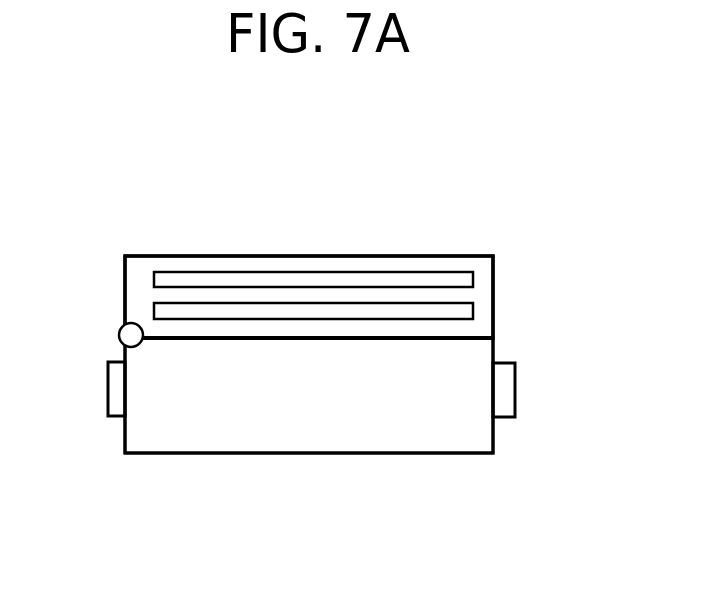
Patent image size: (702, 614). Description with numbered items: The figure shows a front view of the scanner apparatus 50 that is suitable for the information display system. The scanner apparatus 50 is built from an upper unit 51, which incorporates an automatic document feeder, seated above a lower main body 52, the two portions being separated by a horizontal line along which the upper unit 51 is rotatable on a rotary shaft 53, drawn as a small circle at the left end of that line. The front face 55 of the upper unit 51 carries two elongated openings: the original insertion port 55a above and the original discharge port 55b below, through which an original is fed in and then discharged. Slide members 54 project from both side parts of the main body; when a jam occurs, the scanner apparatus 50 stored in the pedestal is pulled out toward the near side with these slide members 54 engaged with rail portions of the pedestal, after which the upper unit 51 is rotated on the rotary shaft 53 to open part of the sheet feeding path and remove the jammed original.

The scanner apparatus 50 is at (500, 200).
The upper unit 51 is at (317, 252).
The lower body portion 52 is at (305, 457).
The rotary shaft 53 is at (120, 336).
The slide members 54 is at (114, 390).
The top plate 55 is at (133, 258).
The original insertion port 55a is at (231, 272).
The original discharge port 55b is at (400, 303).